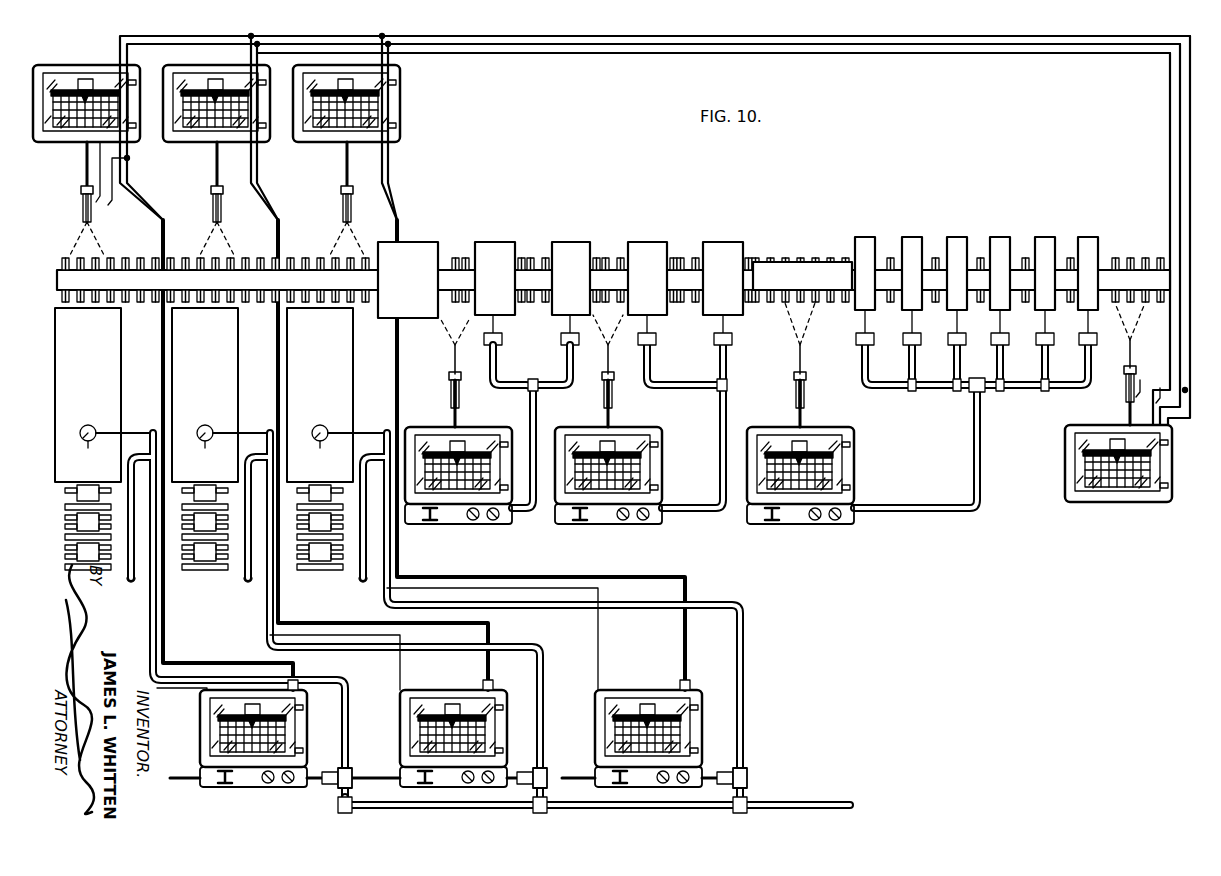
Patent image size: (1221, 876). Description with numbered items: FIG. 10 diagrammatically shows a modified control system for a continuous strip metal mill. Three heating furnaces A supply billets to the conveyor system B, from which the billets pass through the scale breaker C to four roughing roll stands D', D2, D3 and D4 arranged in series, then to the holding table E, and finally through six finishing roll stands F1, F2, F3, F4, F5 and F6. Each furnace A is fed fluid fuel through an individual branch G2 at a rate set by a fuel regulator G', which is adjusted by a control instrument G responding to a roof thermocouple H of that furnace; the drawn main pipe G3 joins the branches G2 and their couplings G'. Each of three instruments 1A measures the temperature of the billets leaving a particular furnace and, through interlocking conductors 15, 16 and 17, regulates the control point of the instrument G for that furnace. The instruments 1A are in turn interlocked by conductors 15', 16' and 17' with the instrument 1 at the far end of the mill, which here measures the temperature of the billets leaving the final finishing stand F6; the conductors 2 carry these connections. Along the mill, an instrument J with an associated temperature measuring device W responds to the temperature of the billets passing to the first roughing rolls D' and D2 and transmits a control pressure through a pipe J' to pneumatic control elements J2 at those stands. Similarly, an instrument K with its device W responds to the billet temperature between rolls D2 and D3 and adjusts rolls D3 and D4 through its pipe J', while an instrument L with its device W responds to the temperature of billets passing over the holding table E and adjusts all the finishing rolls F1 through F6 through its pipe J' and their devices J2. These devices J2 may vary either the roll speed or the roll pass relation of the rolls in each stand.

The conductor / motor unit 1 is at (1096, 424).
The motor units 1A is at (82, 66).
The conductor 2 is at (616, 269).
The interlocking conductor 15 is at (655, 127).
The interlocking conductor 16 is at (653, 131).
The interlocking conductor 17 is at (650, 371).
The interlocking conductor 15' is at (1170, 230).
The interlocking conductor 16' is at (1176, 242).
The interlocking conductor 17' is at (1163, 239).
The heating furnace A is at (204, 439).
The conveyor system B is at (62, 258).
The scale breaker C is at (408, 280).
The roughing roll stand D' is at (495, 287).
The roughing roll stand D2 is at (571, 287).
The roughing roll stand D3 is at (647, 287).
The roughing roll stand D4 is at (723, 287).
The holding table E is at (802, 276).
The finishing roll stand F1 is at (865, 285).
The finishing roll stand F2 is at (912, 285).
The finishing roll stand F3 is at (957, 285).
The finishing roll stand F4 is at (1000, 285).
The finishing roll stand F5 is at (1045, 285).
The finishing roll stand F6 is at (1088, 285).
The control instrument G is at (451, 725).
The fuel regulator G' is at (557, 760).
The fuel branch G2 is at (350, 688).
The main pipe G3 is at (790, 800).
The thermocouple H is at (233, 447).
The control instrument J is at (458, 461).
The control pipe J' is at (795, 420).
The pneumatic control element J2 is at (562, 338).
The control instrument K is at (631, 427).
The control instrument L is at (820, 427).
The temperature measuring device W is at (80, 188).